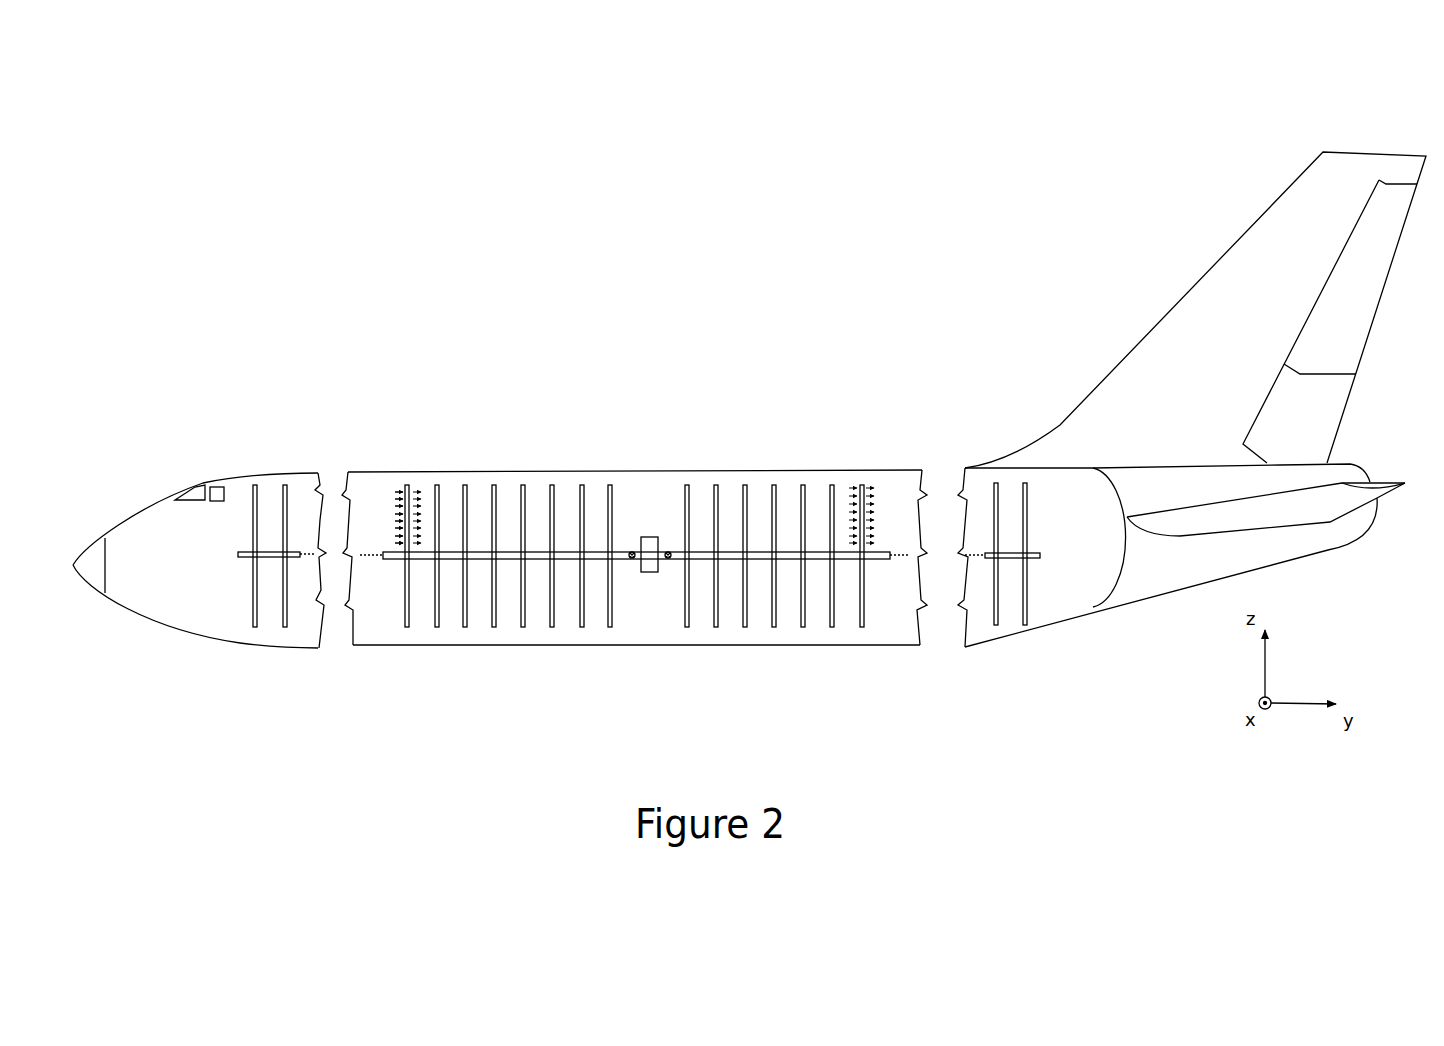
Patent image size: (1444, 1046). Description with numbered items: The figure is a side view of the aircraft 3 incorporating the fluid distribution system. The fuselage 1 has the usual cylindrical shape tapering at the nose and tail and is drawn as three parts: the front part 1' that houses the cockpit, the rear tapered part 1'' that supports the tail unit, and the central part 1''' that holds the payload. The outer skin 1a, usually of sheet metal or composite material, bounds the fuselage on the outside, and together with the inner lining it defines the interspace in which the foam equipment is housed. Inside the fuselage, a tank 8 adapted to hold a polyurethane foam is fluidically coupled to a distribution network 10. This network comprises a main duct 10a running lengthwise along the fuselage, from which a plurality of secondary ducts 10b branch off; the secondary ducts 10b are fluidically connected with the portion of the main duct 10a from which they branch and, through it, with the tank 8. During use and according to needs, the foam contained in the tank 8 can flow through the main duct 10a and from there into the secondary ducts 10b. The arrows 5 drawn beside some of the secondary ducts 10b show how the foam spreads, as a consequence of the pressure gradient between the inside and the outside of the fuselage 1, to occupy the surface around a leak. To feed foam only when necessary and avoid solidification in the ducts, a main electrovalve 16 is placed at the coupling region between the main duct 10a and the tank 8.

The fuselage 1 is at (525, 289).
The front part 1' is at (199, 548).
The rear tapered part 1'' is at (1192, 399).
The central part 1''' is at (634, 514).
The outer skin 1a is at (908, 482).
The aircraft 3 is at (188, 400).
The arrows 5 is at (397, 497).
The tank 8 is at (650, 572).
The distribution network 10 is at (885, 488).
The main duct 10a is at (240, 556).
The secondary ducts 10b is at (285, 485).
The main electrovalve 16 is at (668, 552).